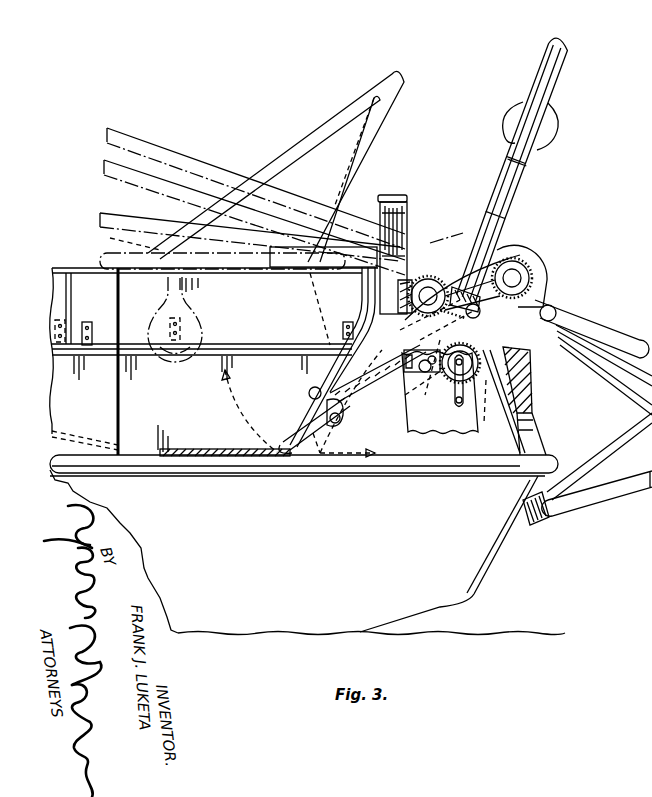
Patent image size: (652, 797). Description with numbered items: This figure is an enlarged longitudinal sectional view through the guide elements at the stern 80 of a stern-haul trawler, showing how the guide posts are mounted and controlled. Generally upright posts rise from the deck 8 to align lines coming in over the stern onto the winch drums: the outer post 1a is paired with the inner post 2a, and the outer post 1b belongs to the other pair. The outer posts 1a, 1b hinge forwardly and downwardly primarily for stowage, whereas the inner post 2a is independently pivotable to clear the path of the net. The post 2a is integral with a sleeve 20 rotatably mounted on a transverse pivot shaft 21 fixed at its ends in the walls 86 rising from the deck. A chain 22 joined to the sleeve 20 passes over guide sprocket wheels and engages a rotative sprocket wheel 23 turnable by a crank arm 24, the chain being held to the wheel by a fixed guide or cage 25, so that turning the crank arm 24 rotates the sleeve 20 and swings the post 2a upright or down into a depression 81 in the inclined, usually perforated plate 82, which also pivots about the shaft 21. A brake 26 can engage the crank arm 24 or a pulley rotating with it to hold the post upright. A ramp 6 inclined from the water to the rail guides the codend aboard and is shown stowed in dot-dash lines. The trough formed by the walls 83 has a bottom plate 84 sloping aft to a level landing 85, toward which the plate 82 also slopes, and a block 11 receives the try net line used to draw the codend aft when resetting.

The outer post 1a is at (499, 236).
The outer post 1b is at (536, 187).
The inner post 2a is at (393, 195).
The ramp 6 is at (163, 147).
The deck 8 is at (130, 455).
The block 11 is at (548, 127).
The sleeve 20 is at (377, 290).
The transverse pivot shaft 21 is at (370, 307).
The chain 22 is at (445, 290).
The sprocket wheel 23 is at (423, 400).
The crank arm 24 is at (460, 370).
The fixed guide or cage 25 is at (504, 401).
The brake 26 is at (413, 372).
The stern 80 is at (535, 397).
The depression 81 is at (337, 383).
The inclined plate 82 is at (300, 422).
The walls 83 is at (148, 309).
The bottom plate 84 is at (122, 443).
The landing 85 is at (178, 449).
The walls 86 is at (417, 270).